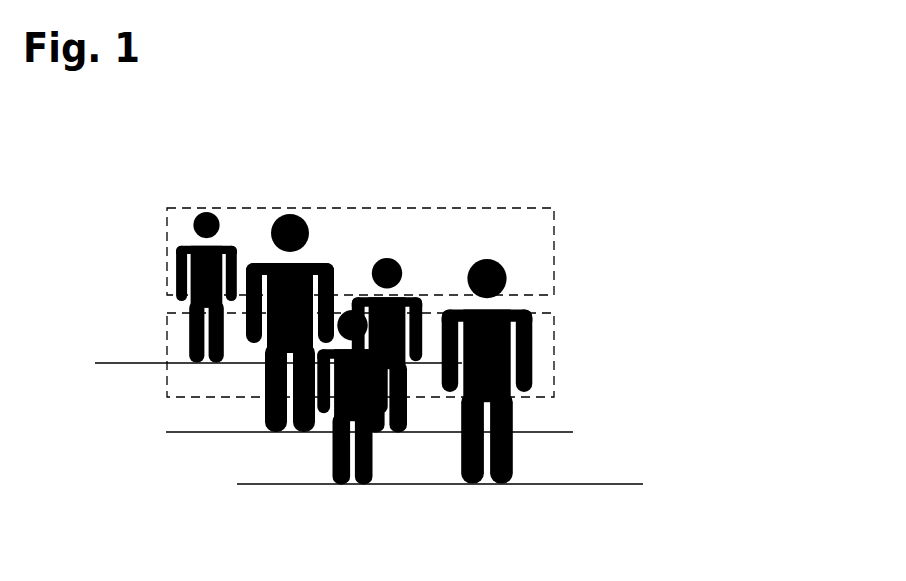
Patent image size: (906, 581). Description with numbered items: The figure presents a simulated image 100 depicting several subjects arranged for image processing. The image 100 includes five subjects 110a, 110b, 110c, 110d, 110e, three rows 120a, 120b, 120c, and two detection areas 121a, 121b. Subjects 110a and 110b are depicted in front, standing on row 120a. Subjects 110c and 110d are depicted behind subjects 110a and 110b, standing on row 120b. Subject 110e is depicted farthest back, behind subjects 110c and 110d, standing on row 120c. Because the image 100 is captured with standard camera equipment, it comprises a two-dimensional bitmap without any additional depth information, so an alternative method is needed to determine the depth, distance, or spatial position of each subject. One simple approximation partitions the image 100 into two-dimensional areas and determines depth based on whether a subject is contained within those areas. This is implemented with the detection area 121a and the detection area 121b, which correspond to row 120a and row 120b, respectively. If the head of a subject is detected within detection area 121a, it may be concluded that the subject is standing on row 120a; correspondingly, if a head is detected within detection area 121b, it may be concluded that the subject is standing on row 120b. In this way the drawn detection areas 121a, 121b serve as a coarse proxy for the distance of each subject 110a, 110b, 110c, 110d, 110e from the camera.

The image 100 is at (795, 91).
The subject 110a is at (244, 420).
The subject 110b is at (316, 412).
The subject 110c is at (456, 278).
The subject 110d is at (509, 295).
The subject 110e is at (421, 226).
The row 120a is at (522, 498).
The row 120b is at (487, 446).
The row 120c is at (451, 377).
The detection area 121a is at (554, 328).
The detection area 121b is at (554, 224).